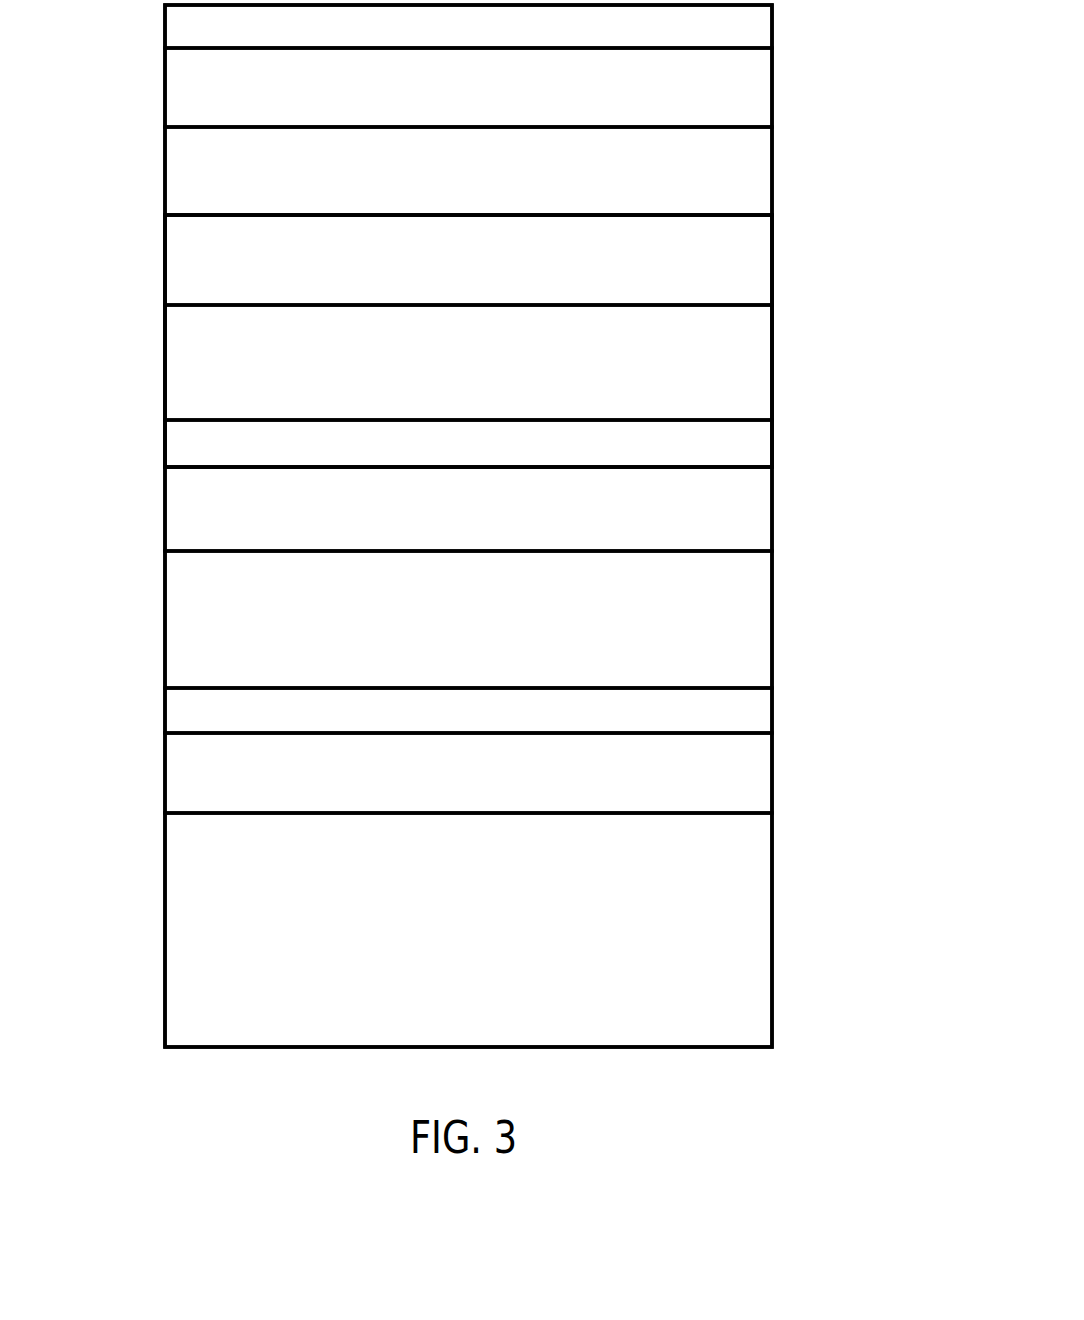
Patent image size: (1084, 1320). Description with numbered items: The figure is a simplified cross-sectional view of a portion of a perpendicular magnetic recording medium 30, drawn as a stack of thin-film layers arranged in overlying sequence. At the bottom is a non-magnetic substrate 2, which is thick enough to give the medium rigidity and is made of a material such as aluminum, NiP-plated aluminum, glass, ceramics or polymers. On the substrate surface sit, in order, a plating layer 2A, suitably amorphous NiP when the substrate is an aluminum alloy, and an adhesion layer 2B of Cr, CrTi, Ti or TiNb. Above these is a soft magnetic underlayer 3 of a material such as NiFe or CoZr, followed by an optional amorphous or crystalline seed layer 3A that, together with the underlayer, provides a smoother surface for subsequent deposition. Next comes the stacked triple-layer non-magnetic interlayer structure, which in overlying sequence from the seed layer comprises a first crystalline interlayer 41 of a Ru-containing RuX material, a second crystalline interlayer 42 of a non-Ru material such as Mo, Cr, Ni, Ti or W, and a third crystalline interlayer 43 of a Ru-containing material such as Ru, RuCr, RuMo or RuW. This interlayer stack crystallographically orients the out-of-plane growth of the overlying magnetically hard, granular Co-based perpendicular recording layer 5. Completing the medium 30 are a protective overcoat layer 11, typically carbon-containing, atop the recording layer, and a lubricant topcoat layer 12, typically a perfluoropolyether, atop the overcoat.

The perpendicular magnetic recording medium 30 is at (112, 108).
The lubricant topcoat layer 12 is at (768, 27).
The protective overcoat layer 11 is at (768, 86).
The perpendicular recording layer 5 is at (768, 170).
The third crystalline interlayer 43 is at (768, 257).
The second crystalline interlayer 42 is at (768, 360).
The first crystalline interlayer 41 is at (768, 446).
The amorphous or crystalline seed layer 3A is at (768, 510).
The soft magnetic underlayer 3 is at (768, 612).
The adhesion layer 2B is at (768, 712).
The plating layer 2A is at (768, 773).
The non-magnetic substrate 2 is at (768, 913).